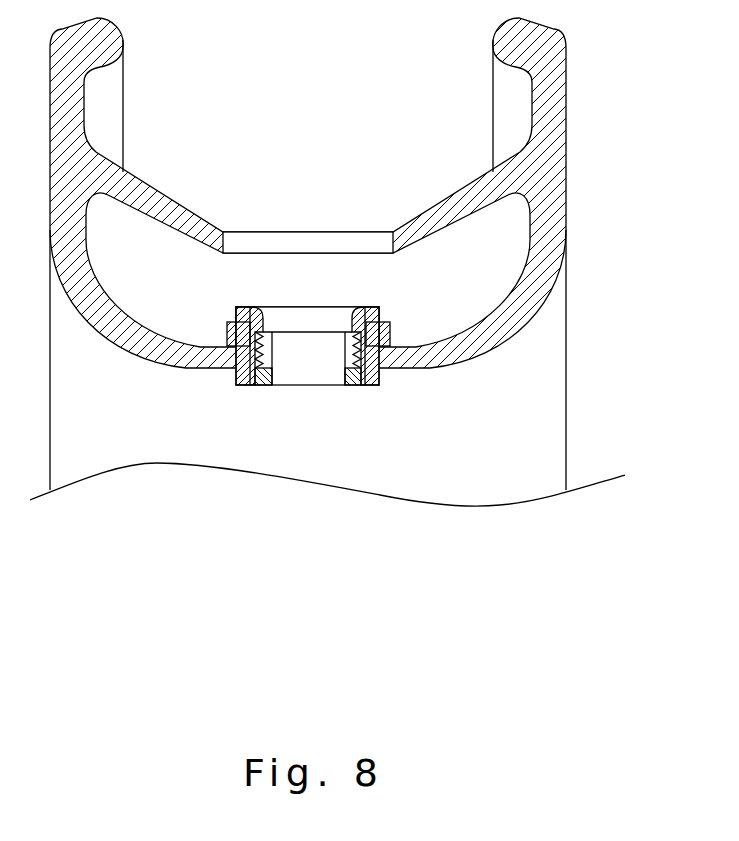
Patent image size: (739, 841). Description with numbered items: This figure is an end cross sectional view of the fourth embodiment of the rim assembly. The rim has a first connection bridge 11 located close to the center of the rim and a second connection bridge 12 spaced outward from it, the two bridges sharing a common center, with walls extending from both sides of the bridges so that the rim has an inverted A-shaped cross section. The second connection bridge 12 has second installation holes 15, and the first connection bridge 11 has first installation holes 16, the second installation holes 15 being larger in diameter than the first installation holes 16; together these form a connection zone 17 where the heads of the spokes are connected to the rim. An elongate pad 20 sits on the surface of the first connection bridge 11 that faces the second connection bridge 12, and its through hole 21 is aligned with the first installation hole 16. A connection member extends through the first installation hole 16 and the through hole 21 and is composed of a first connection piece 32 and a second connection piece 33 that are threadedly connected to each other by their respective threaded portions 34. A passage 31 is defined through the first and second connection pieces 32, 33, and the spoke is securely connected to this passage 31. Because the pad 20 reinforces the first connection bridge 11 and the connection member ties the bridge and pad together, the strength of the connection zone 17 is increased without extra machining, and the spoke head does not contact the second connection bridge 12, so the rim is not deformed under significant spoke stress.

The first connection bridge 11 is at (485, 333).
The second connection bridge 12 is at (157, 213).
The second installation holes 15 is at (340, 243).
The first installation holes 16 is at (345, 360).
The connection zone 17 is at (228, 399).
The pad 20 is at (392, 328).
The through hole 21 is at (266, 331).
The passage 31 is at (300, 377).
The first connection piece 32 is at (250, 386).
The second connection piece 33 is at (250, 317).
The threaded portions 34 is at (280, 332).